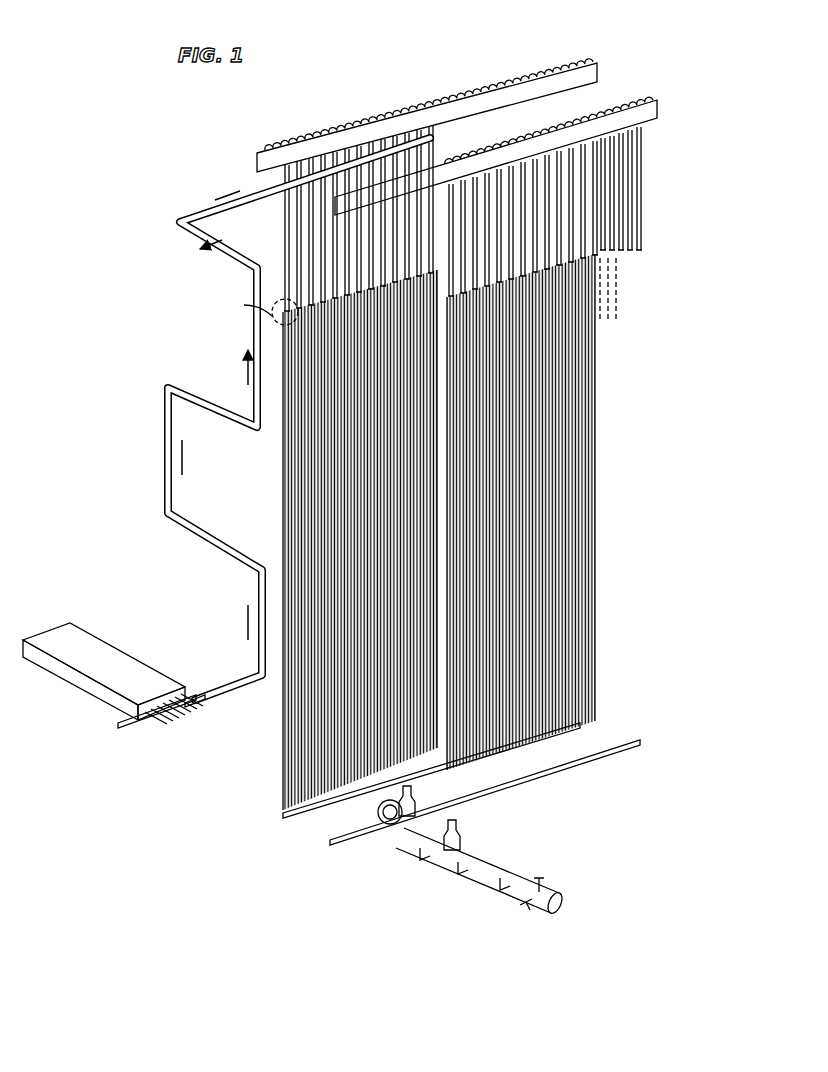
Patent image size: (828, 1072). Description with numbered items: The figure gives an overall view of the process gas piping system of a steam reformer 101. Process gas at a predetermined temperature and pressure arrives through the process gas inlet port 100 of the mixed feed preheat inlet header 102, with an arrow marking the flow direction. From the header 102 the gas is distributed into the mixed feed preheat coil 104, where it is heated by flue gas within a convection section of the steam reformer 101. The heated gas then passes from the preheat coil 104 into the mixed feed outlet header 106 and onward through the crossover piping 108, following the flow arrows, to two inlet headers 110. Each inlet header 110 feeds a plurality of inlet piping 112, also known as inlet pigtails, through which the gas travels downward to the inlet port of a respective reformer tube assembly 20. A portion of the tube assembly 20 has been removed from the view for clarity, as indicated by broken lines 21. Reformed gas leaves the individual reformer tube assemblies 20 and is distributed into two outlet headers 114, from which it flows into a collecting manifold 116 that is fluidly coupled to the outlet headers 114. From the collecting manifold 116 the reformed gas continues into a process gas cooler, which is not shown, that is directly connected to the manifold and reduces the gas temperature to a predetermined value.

The reformer tube assembly 20 is at (598, 400).
The broken lines 21 is at (618, 308).
The process gas inlet port 100 is at (128, 731).
The steam reformer 101 is at (152, 206).
The mixed feed preheat inlet header 102 is at (190, 724).
The mixed feed preheat coil 104 is at (85, 625).
The mixed feed outlet header 106 is at (196, 698).
The crossover piping 108 is at (258, 336).
The inlet header 110 is at (598, 55).
The inlet piping 112 is at (650, 186).
The outlet header 114 is at (290, 822).
The collecting manifold 116 is at (490, 862).